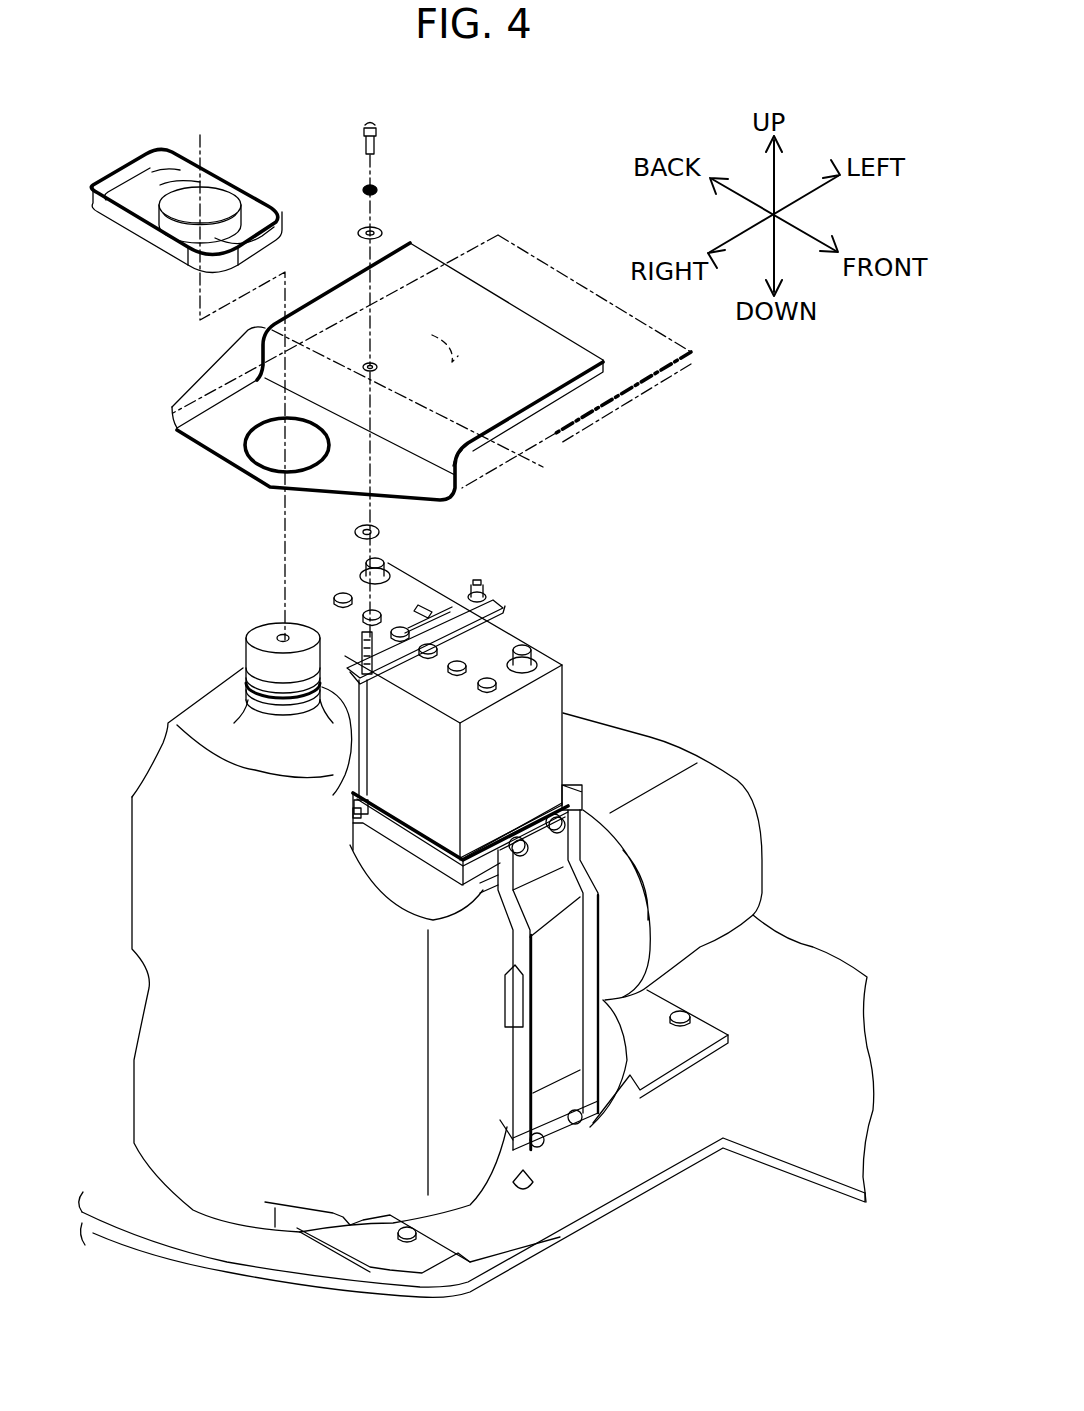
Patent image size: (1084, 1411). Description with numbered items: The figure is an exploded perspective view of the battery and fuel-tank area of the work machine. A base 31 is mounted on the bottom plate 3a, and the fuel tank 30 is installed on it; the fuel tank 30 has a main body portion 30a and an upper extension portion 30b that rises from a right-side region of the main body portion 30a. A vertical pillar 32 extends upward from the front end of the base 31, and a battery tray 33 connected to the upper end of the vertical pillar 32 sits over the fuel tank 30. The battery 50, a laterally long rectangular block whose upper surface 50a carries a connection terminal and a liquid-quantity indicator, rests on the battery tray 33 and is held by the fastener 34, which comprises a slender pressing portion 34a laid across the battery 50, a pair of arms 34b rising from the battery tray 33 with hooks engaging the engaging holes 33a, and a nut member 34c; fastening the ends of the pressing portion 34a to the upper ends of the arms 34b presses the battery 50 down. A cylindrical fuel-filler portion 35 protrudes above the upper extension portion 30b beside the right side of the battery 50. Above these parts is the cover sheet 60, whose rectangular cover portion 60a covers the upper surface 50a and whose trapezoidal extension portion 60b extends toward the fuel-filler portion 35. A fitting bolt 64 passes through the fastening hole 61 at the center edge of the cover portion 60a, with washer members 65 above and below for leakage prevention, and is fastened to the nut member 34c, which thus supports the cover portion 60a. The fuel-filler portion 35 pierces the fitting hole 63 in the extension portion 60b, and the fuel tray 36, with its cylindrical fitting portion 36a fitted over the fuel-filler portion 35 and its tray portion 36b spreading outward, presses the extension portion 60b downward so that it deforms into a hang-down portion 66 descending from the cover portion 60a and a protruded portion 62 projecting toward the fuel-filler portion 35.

The bottom plate 3a is at (138, 1243).
The fuel tank 30 is at (477, 950).
The main body portion 30a is at (642, 767).
The upper extension portion 30b is at (188, 769).
The base 31 is at (490, 1210).
The vertical pillar 32 is at (558, 1040).
The battery tray 33 is at (417, 871).
The engaging holes 33a is at (347, 822).
The fastener 34 is at (449, 660).
The pressing portion 34a is at (493, 618).
The arms 34b is at (368, 745).
The nut member 34c is at (360, 640).
The fuel-filler portion 35 is at (262, 638).
The fuel tray 36 is at (184, 191).
The fitting portion 36a is at (222, 193).
The tray portion 36b is at (138, 188).
The battery 50 is at (487, 709).
The upper surface 50a is at (460, 703).
The cover sheet 60 is at (415, 350).
The cover portion 60a is at (608, 400).
The extension portion 60b is at (340, 318).
The fastening hole 61 is at (373, 368).
The protruded portion 62 is at (222, 430).
The fitting hole 63 is at (267, 460).
The fitting bolt 64 is at (375, 130).
The washer members 65 is at (383, 235).
The hang-down portion 66 is at (440, 462).